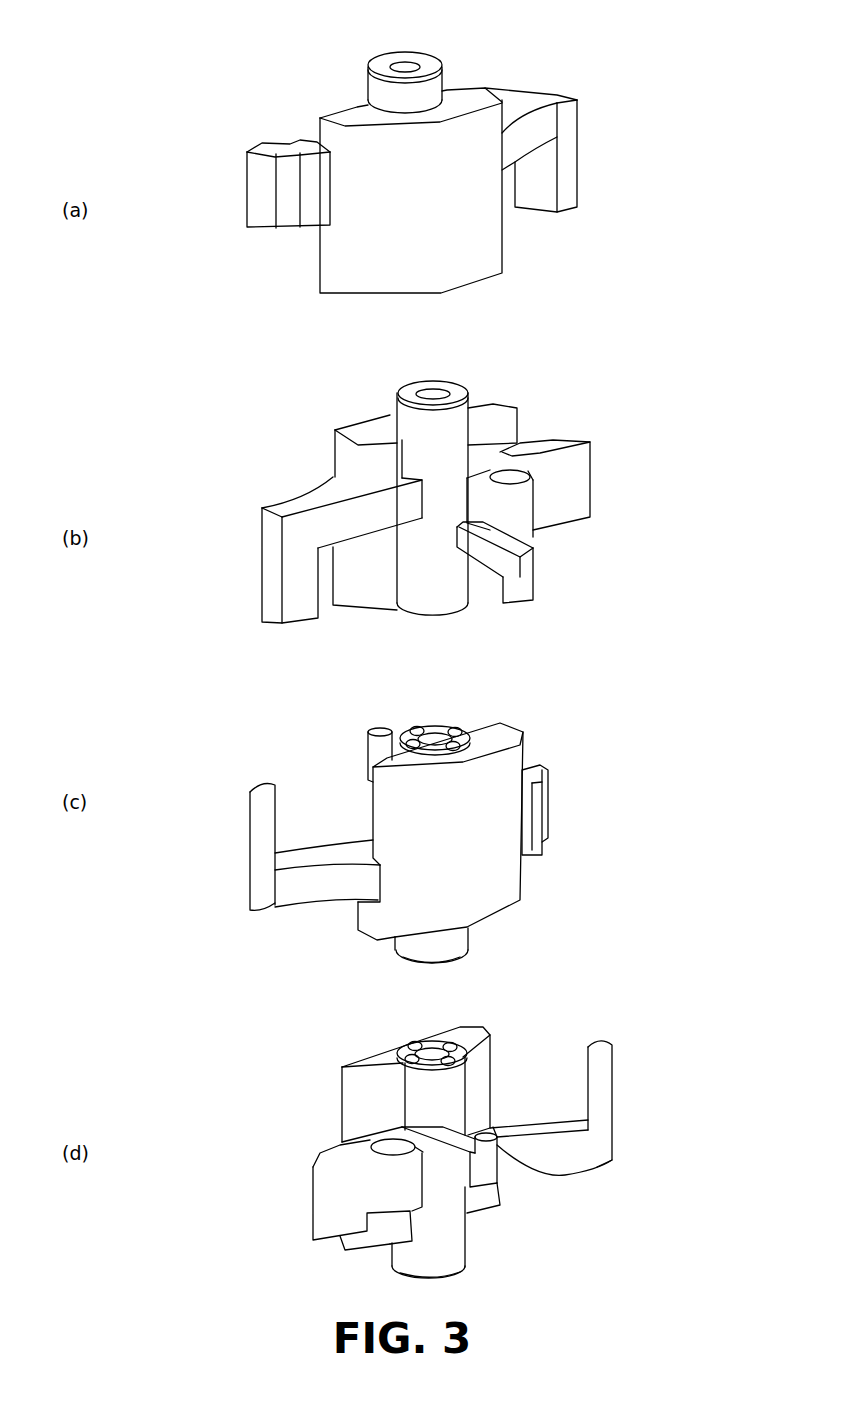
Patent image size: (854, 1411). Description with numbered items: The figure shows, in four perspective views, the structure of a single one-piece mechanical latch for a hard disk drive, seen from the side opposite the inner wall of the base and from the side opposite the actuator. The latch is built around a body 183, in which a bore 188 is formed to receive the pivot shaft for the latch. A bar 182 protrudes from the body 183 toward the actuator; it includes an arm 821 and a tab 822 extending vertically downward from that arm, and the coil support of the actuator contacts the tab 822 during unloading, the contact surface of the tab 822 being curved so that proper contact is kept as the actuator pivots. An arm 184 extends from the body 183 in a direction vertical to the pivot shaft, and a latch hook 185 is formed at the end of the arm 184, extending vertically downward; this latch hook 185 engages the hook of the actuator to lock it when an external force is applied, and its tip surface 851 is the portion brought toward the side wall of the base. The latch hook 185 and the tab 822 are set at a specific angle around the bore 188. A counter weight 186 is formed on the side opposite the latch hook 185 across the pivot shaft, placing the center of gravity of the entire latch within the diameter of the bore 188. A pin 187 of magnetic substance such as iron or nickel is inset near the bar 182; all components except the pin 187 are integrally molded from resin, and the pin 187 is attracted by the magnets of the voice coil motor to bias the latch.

The bar 182 is at (505, 876).
The body 183 is at (343, 263).
The arm 184 is at (520, 102).
The latch hook 185 is at (572, 143).
The counter weight 186 is at (290, 147).
The pin 187 is at (510, 477).
The bore 188 is at (408, 65).
The arm 821 is at (493, 560).
The tab 822 is at (528, 588).
The contact surface 851 is at (543, 197).